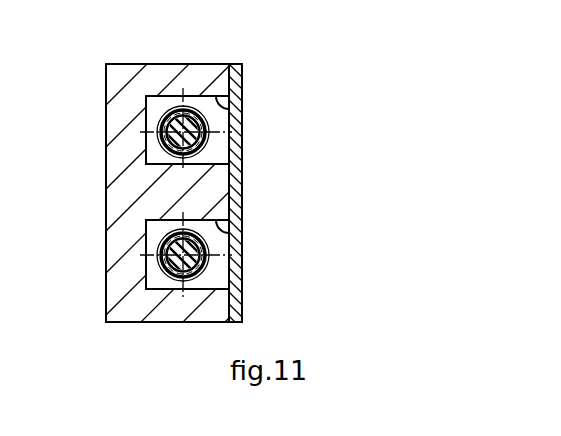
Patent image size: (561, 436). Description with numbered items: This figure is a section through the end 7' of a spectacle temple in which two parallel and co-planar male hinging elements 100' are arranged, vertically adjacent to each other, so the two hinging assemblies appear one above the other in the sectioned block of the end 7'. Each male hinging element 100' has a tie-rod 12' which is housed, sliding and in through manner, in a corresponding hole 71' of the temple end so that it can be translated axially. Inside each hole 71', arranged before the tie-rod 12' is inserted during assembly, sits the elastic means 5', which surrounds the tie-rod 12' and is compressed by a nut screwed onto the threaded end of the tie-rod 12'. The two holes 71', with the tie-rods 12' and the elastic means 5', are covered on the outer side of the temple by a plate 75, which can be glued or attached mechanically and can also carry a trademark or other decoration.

The end of temple 7' is at (262, 193).
The plate 75 is at (240, 73).
The hole 71' is at (246, 194).
The male hinging element 100' is at (132, 201).
The tie-rod 12' is at (121, 174).
The elastic means 5' is at (189, 201).